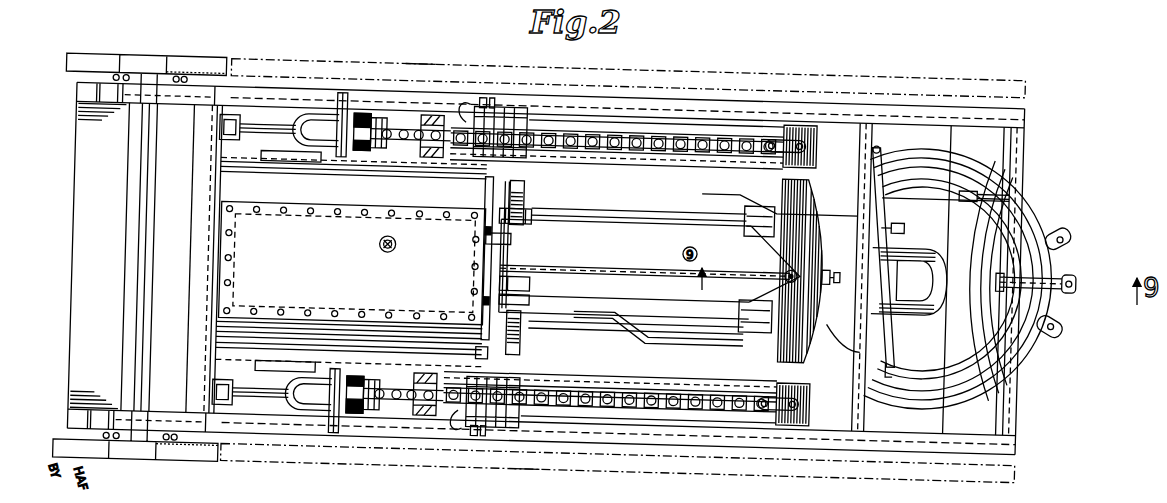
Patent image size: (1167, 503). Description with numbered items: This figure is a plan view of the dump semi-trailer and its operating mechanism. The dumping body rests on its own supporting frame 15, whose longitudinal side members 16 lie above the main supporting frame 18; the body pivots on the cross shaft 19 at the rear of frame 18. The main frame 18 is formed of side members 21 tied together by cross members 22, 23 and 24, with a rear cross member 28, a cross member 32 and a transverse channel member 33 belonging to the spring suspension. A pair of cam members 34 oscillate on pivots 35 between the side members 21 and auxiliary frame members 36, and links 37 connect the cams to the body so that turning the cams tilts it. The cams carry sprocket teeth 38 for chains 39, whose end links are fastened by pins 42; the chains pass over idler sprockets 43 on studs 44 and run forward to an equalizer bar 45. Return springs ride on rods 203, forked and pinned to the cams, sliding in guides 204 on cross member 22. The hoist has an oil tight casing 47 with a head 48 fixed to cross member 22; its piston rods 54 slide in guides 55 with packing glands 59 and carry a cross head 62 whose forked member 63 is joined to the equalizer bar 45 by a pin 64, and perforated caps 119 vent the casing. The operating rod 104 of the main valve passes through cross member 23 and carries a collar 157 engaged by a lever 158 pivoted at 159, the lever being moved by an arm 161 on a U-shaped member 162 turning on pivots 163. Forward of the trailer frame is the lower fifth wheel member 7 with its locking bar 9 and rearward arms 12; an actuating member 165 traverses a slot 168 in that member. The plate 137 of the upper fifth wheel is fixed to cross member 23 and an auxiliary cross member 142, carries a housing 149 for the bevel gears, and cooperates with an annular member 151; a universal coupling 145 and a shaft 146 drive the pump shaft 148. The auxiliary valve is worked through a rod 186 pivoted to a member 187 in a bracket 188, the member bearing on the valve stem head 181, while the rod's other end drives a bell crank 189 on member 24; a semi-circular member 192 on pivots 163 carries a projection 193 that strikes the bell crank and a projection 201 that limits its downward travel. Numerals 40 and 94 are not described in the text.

The lower fifth wheel member 7 is at (1007, 372).
The locking bar 9 is at (1078, 282).
The arms 12 is at (707, 193).
The supporting frame 15 is at (412, 58).
The side members 16 is at (198, 63).
The main supporting frame 18 is at (278, 83).
The cross shaft 19 is at (142, 235).
The side members 21 is at (741, 107).
The cross member 22 is at (185, 357).
The cross member 23 is at (858, 420).
The cross member 24 is at (1013, 423).
The cross member 28 is at (80, 335).
The cross member 32 is at (459, 102).
The transverse channel member 33 is at (508, 300).
The cam members 34 is at (378, 110).
The pivots 35 is at (325, 173).
The auxiliary frame members 36 is at (283, 153).
The links 37 is at (426, 114).
The sprocket teeth 38 is at (387, 160).
The chains 39 is at (581, 120).
The bracket 40 is at (483, 358).
The pins 42 is at (390, 113).
The idler sprockets 43 is at (498, 114).
The studs 44 is at (488, 98).
The equalizer bar 45 is at (797, 126).
The casing 47 is at (223, 190).
The head 48 is at (218, 220).
The piston rods 54 is at (591, 207).
The guides 55 is at (518, 188).
The packing gland 59 is at (518, 199).
The cross head 62 is at (752, 310).
The forked member 63 is at (762, 283).
The pin 64 is at (787, 277).
The member 94 is at (527, 486).
The operating rod 104 is at (650, 342).
The perforated caps 119 is at (378, 245).
The plate 137 is at (946, 360).
The auxiliary cross member 142 is at (945, 408).
The universal coupling 145 is at (838, 272).
The shaft 146 is at (652, 281).
The pump shaft 148 is at (513, 288).
The housing 149 is at (973, 280).
The annular member 151 is at (1019, 337).
The collar 157 is at (889, 372).
The lever 158 is at (884, 180).
The pivot 159 is at (872, 157).
The arm 161 is at (898, 221).
The U-shaped member 162 is at (936, 268).
The pivots 163 is at (853, 348).
The actuating member 165 is at (984, 252).
The slot 168 is at (1014, 300).
The head 181 is at (510, 262).
The rod 186 is at (613, 213).
The member 187 is at (505, 235).
The bracket 188 is at (477, 251).
The bell crank 189 is at (995, 192).
The semi-circular member 192 is at (1019, 360).
The projection 193 is at (960, 185).
The projection 201 is at (999, 281).
The rods 203 is at (323, 160).
The guides 204 is at (228, 118).